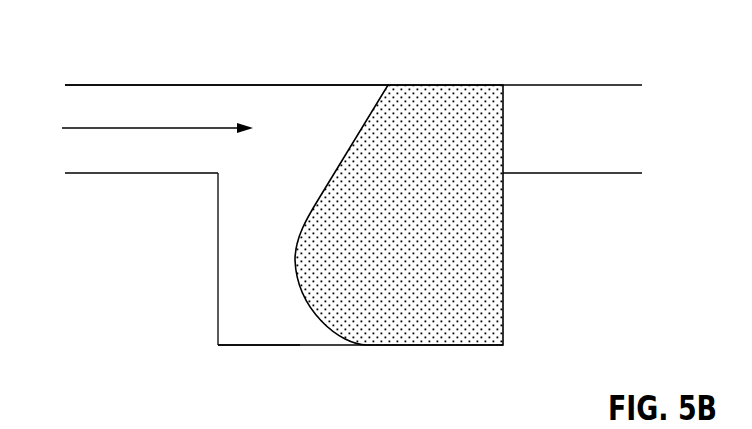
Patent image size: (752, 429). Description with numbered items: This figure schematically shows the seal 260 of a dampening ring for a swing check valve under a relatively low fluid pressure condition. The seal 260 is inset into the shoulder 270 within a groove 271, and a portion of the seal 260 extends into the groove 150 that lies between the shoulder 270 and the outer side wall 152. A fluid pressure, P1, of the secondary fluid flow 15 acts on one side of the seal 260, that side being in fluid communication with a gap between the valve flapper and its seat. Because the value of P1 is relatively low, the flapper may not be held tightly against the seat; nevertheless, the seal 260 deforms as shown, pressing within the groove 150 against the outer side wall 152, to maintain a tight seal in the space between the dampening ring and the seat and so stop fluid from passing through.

The secondary fluid flow 15 is at (136, 128).
The groove 150 is at (556, 107).
The outer side wall 152 is at (330, 85).
The seal 260 is at (477, 284).
The shoulder 270 is at (523, 226).
The groove 271 is at (254, 345).